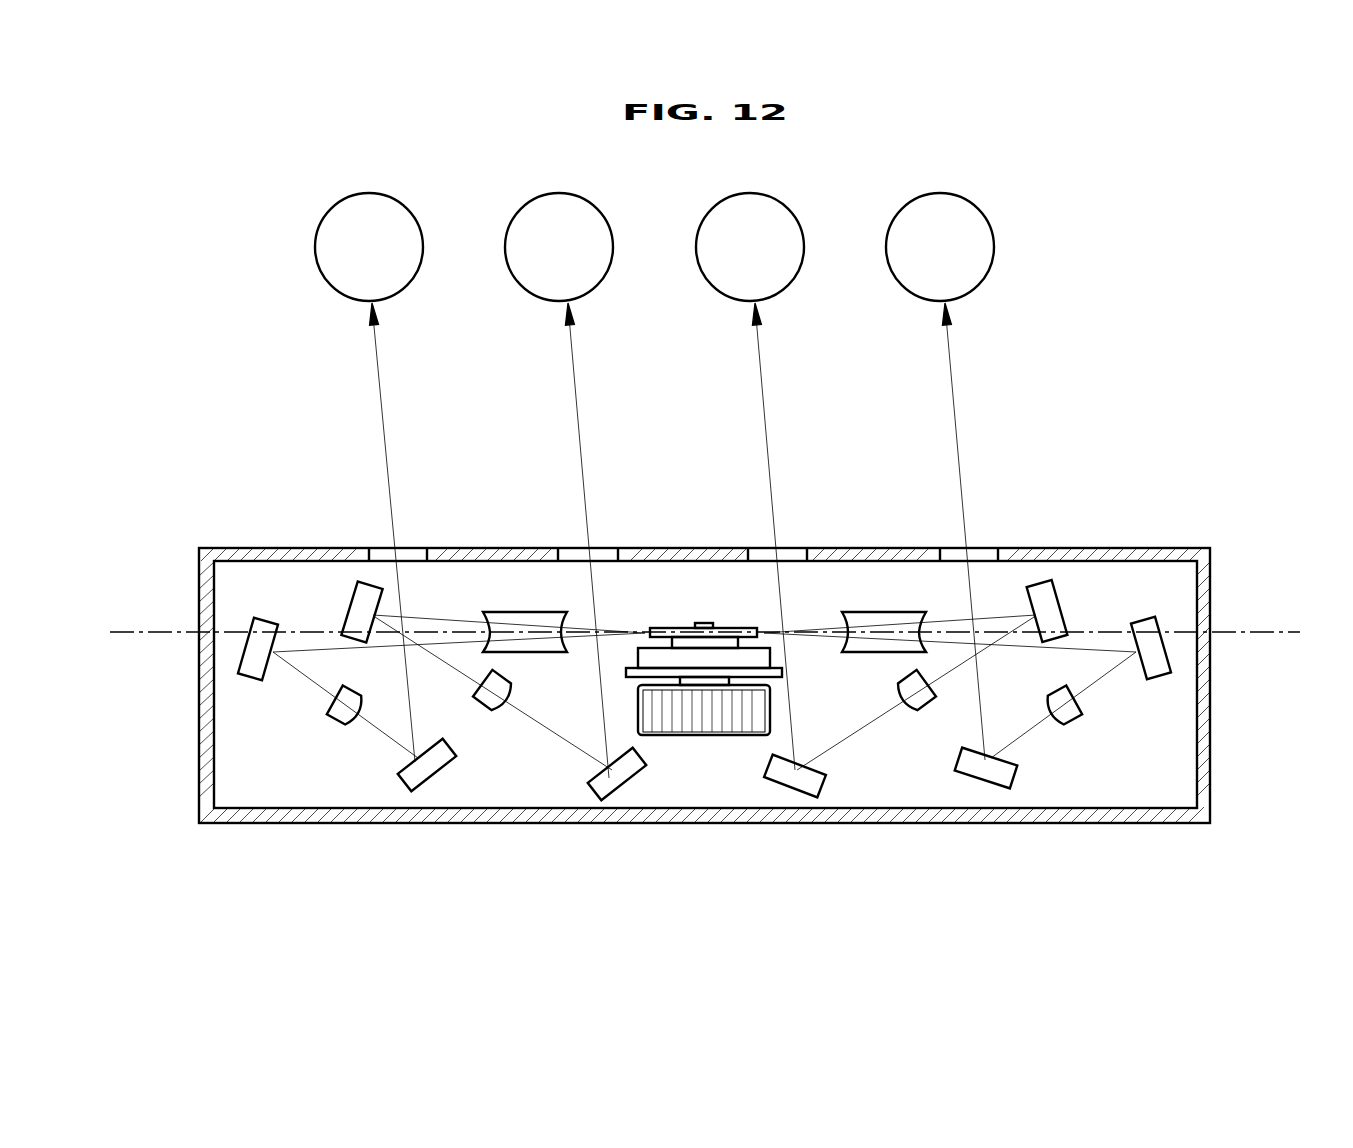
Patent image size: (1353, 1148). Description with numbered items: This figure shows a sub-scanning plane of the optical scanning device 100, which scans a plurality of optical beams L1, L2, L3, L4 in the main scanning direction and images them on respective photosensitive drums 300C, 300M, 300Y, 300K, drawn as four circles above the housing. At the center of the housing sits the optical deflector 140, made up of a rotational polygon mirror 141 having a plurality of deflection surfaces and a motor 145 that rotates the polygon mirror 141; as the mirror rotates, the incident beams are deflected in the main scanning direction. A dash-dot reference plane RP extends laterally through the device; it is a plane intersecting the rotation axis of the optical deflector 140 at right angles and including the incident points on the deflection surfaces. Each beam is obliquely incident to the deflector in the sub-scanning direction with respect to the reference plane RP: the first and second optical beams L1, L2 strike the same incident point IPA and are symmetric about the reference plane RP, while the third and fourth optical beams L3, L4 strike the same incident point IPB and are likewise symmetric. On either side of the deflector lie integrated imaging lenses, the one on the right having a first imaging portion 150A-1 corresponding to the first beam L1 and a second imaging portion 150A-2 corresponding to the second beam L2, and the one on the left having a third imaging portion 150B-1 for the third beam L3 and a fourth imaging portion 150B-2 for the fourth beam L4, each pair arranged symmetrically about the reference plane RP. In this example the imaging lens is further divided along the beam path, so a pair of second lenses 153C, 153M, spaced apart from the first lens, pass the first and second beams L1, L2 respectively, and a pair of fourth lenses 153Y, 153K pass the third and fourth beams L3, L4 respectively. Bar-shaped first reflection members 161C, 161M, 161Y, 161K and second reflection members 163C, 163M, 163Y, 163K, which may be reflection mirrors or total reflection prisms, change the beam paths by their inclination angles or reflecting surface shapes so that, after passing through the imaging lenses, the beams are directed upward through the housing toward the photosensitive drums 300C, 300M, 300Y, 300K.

The optical scanning device 100 is at (1214, 514).
The reference plane RP is at (118, 632).
The photosensitive drum 300K is at (400, 278).
The photosensitive drum 300Y is at (594, 278).
The photosensitive drum 300M is at (785, 275).
The photosensitive drum 300C is at (977, 275).
The first optical beam L1 is at (955, 419).
The second optical beam L2 is at (762, 419).
The third optical beam L3 is at (578, 411).
The fourth optical beam L4 is at (380, 399).
The first reflection member 161K is at (250, 653).
The first reflection member 161Y is at (362, 588).
The first reflection member 161M is at (1047, 590).
The first reflection member 161C is at (1160, 653).
The fourth lens 153K is at (337, 707).
The fourth lens 153Y is at (492, 708).
The second lens 153M is at (915, 705).
The second lens 153C is at (1067, 727).
The second reflection member 163K is at (423, 772).
The second reflection member 163Y is at (606, 788).
The second reflection member 163M is at (803, 783).
The second reflection member 163C is at (997, 780).
The third imaging portion 150B-1 is at (535, 612).
The fourth imaging portion 150B-2 is at (492, 653).
The first imaging portion 150A-1 is at (893, 615).
The second imaging portion 150A-2 is at (860, 648).
The incident point IPA is at (650, 632).
The incident point IPB is at (757, 632).
The optical deflector 140 is at (704, 700).
The rotational polygon mirror 141 is at (688, 632).
The motor 145 is at (680, 728).